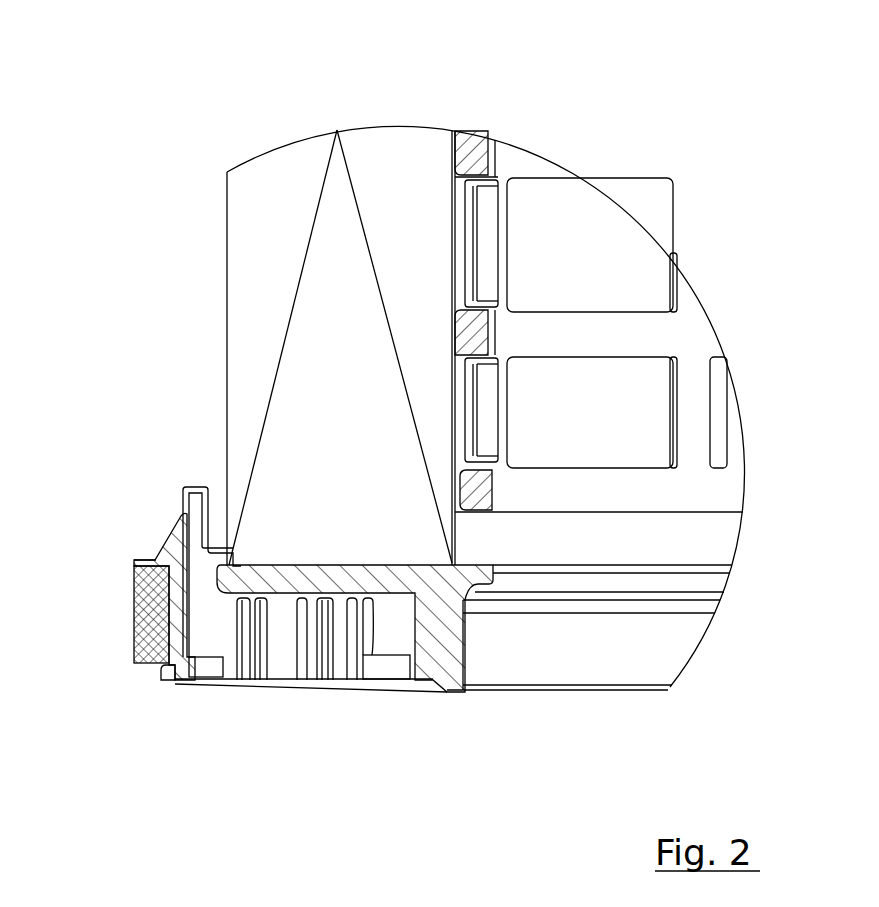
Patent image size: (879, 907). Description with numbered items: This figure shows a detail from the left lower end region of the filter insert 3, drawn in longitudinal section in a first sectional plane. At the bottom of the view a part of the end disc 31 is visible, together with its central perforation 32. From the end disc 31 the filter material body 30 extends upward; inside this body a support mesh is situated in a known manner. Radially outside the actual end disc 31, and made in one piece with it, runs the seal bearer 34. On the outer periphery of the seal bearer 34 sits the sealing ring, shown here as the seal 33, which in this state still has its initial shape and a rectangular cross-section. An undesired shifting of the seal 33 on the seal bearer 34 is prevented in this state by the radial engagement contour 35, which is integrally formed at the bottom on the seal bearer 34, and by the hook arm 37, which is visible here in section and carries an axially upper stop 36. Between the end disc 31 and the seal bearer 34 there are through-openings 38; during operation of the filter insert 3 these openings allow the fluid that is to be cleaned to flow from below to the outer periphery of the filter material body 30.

The filter insert 3 is at (645, 105).
The filter material body 30 is at (250, 288).
The end disc 31 is at (343, 577).
The central perforation 32 is at (592, 586).
The seal 33 is at (150, 603).
The seal bearer 34 is at (178, 620).
The radial engagement contour 35 is at (162, 674).
The axially upper stop 36 is at (168, 563).
The hook arm 37 is at (183, 537).
The through-openings 38 is at (207, 580).